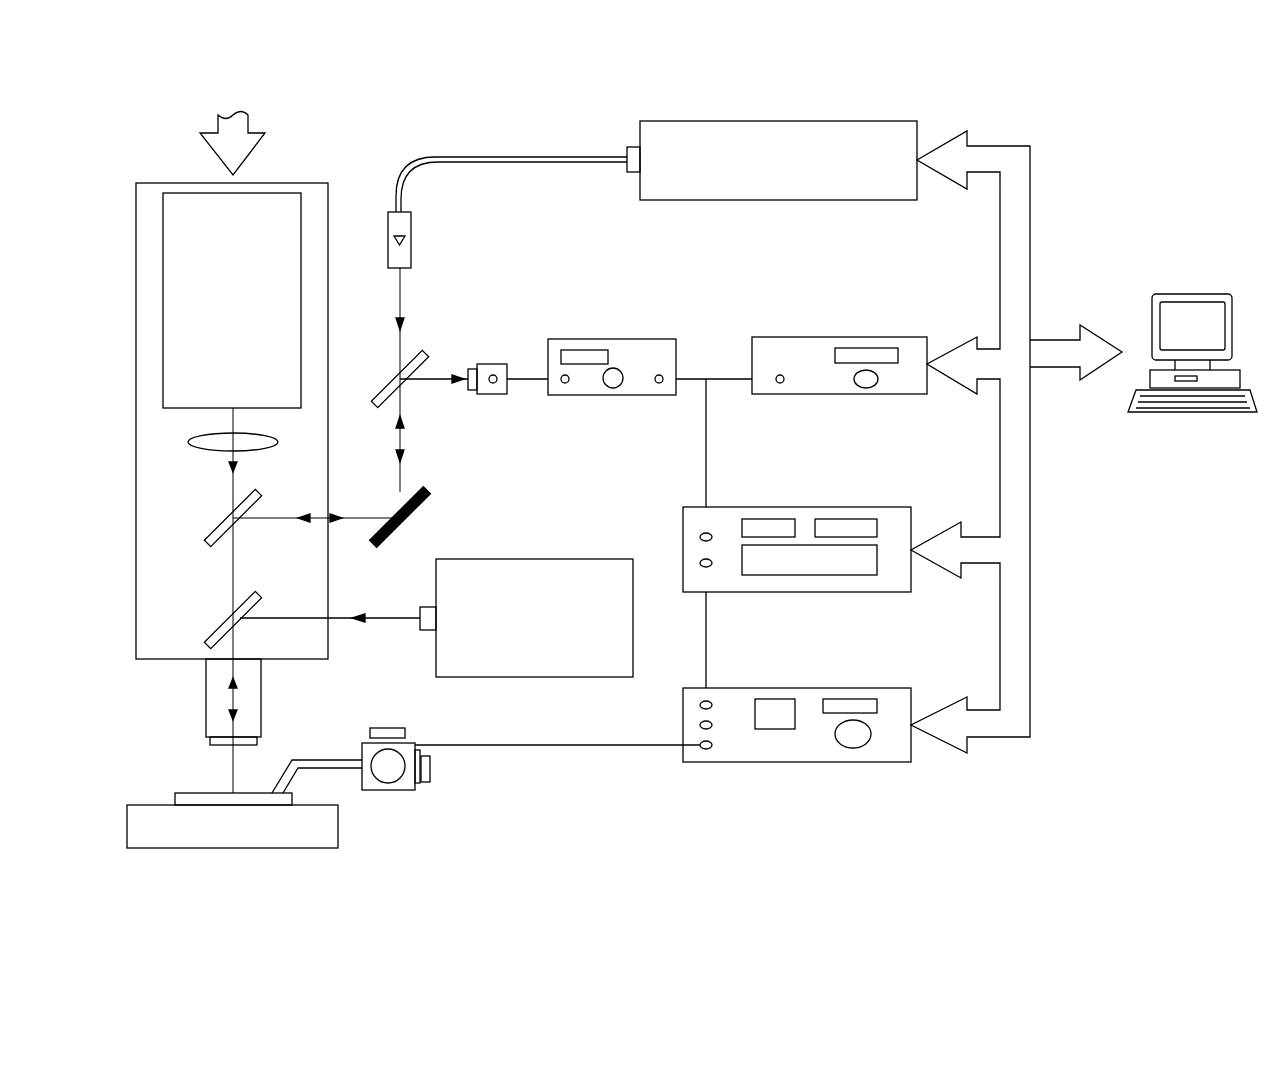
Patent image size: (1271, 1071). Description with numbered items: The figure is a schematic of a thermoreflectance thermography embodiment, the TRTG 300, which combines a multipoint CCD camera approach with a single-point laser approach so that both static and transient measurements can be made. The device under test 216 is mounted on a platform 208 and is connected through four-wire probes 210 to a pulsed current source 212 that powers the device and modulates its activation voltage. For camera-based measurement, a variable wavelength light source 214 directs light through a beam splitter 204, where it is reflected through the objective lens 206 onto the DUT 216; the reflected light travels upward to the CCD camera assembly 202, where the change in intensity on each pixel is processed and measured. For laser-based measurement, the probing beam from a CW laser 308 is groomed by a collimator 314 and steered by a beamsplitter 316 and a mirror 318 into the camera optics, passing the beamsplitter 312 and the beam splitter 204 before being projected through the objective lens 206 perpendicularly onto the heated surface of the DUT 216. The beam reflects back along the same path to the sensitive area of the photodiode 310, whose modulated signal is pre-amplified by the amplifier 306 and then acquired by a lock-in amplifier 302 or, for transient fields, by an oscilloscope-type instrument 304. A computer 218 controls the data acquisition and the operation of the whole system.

The CCD camera assembly 202 is at (178, 183).
The beam splitter 204 is at (222, 623).
The objective lens 206 is at (208, 699).
The platform 208 is at (233, 848).
The 4-wire probes 210 is at (392, 790).
The pulsed current source 212 is at (787, 752).
The variable wavelength light source 214 is at (585, 558).
The device under test 216 is at (178, 793).
The computer 218 is at (1190, 412).
The TRTG 300 is at (583, 103).
The lock-in amplifier 302 is at (878, 558).
The oscilloscope 304 is at (910, 345).
The pre-amplifier 306 is at (658, 339).
The CW laser 308 is at (770, 121).
The photodiode 310 is at (490, 394).
The beamsplitter 312 is at (222, 518).
The collimator 314 is at (412, 222).
The beamsplitter 316 is at (403, 376).
The mirror 318 is at (405, 523).